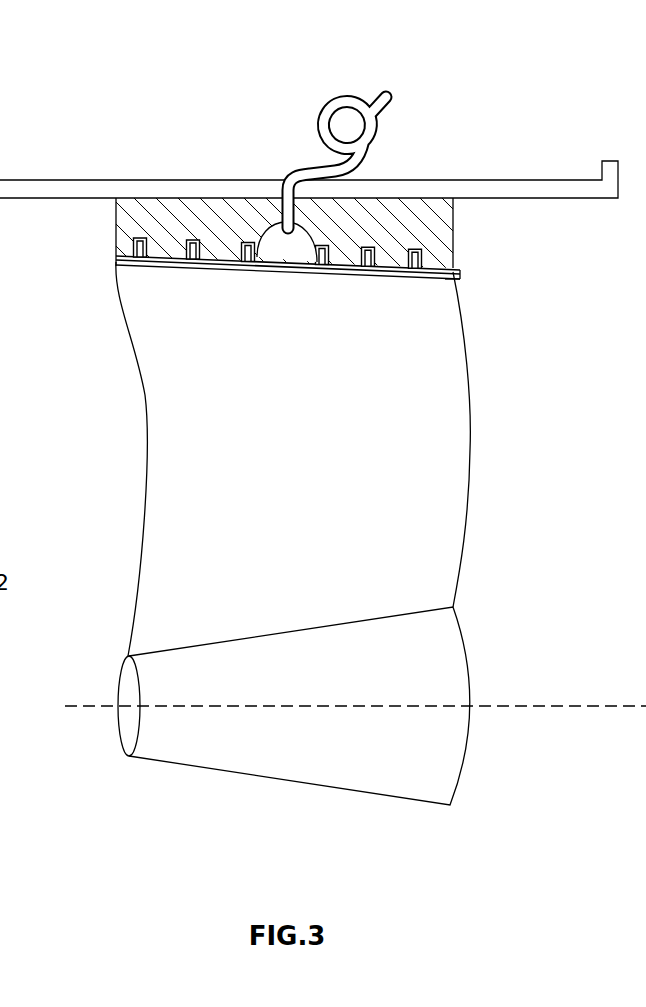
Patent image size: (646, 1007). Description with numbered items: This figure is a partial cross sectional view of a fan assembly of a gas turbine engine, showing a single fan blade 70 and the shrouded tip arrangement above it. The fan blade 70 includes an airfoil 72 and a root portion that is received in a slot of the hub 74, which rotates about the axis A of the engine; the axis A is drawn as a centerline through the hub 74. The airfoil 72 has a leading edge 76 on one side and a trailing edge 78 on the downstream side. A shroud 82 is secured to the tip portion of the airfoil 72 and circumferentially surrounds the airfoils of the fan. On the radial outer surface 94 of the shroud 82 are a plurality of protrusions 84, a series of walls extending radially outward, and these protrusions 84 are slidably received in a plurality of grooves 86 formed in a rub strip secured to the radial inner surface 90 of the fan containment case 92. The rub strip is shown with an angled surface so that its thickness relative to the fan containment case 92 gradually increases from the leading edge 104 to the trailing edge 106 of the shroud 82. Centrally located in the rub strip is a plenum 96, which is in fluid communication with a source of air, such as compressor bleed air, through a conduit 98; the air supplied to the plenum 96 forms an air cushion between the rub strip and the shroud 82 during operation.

The fan blade 70 is at (490, 581).
The airfoil 72 is at (365, 560).
The hub 74 is at (397, 773).
The leading edge 76 is at (145, 398).
The trailing edge 78 is at (470, 385).
The shroud 82 is at (242, 258).
The protrusions 84 is at (160, 268).
The grooves 86 is at (193, 236).
The radial inner surface 90 is at (561, 198).
The fan containment case 92 is at (200, 266).
The radial outer surface 94 is at (463, 270).
The plenum 96 is at (272, 222).
The conduit 98 is at (335, 96).
The leading edge 104 is at (112, 260).
The trailing edge 106 is at (455, 275).
The axis A is at (602, 706).